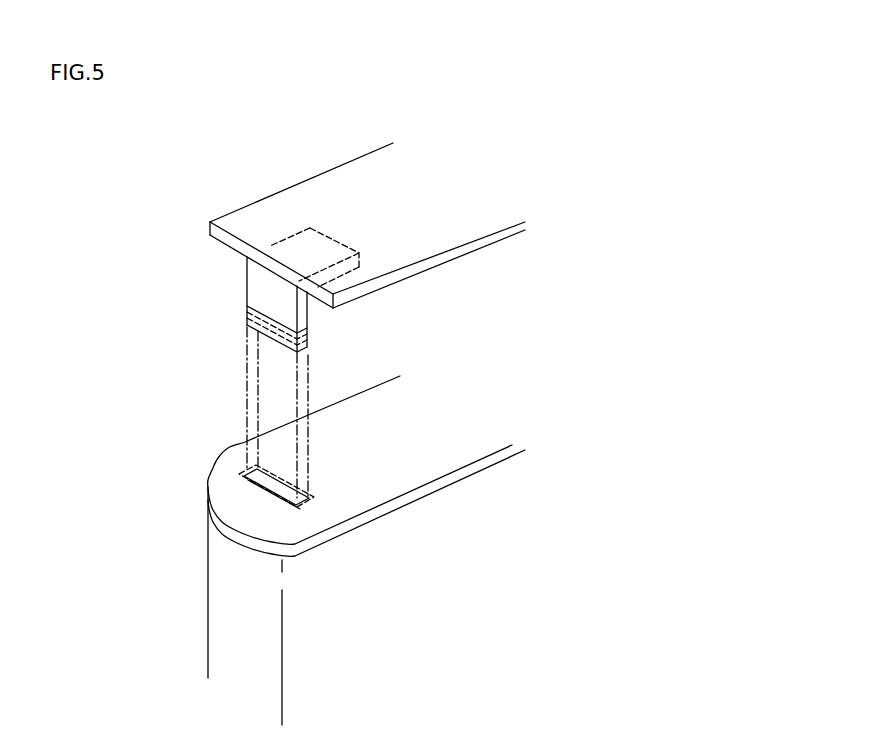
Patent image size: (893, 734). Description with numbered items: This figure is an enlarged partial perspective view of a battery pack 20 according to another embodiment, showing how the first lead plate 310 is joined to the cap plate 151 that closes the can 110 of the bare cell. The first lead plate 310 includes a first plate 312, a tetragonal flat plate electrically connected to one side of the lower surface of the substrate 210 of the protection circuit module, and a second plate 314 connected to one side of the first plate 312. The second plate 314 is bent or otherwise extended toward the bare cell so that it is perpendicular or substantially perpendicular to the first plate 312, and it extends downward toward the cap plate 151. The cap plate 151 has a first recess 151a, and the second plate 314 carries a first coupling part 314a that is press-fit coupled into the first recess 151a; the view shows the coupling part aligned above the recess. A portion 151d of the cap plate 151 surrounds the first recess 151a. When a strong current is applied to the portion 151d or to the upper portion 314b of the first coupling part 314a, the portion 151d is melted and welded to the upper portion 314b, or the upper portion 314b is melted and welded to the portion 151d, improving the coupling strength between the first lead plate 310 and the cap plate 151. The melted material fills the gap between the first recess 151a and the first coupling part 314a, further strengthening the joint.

The battery pack 20 is at (125, 165).
The substrate 210 is at (273, 205).
The first lead plate 310 is at (147, 247).
The first plate 312 is at (275, 247).
The second plate 314 is at (255, 286).
The upper portion of the first coupling part 314b is at (252, 313).
The first coupling part 314a is at (253, 326).
The cap plate 151 is at (228, 503).
The first recess 151a is at (251, 467).
The portion of the cap plate 151d is at (240, 477).
The can 110 is at (218, 590).